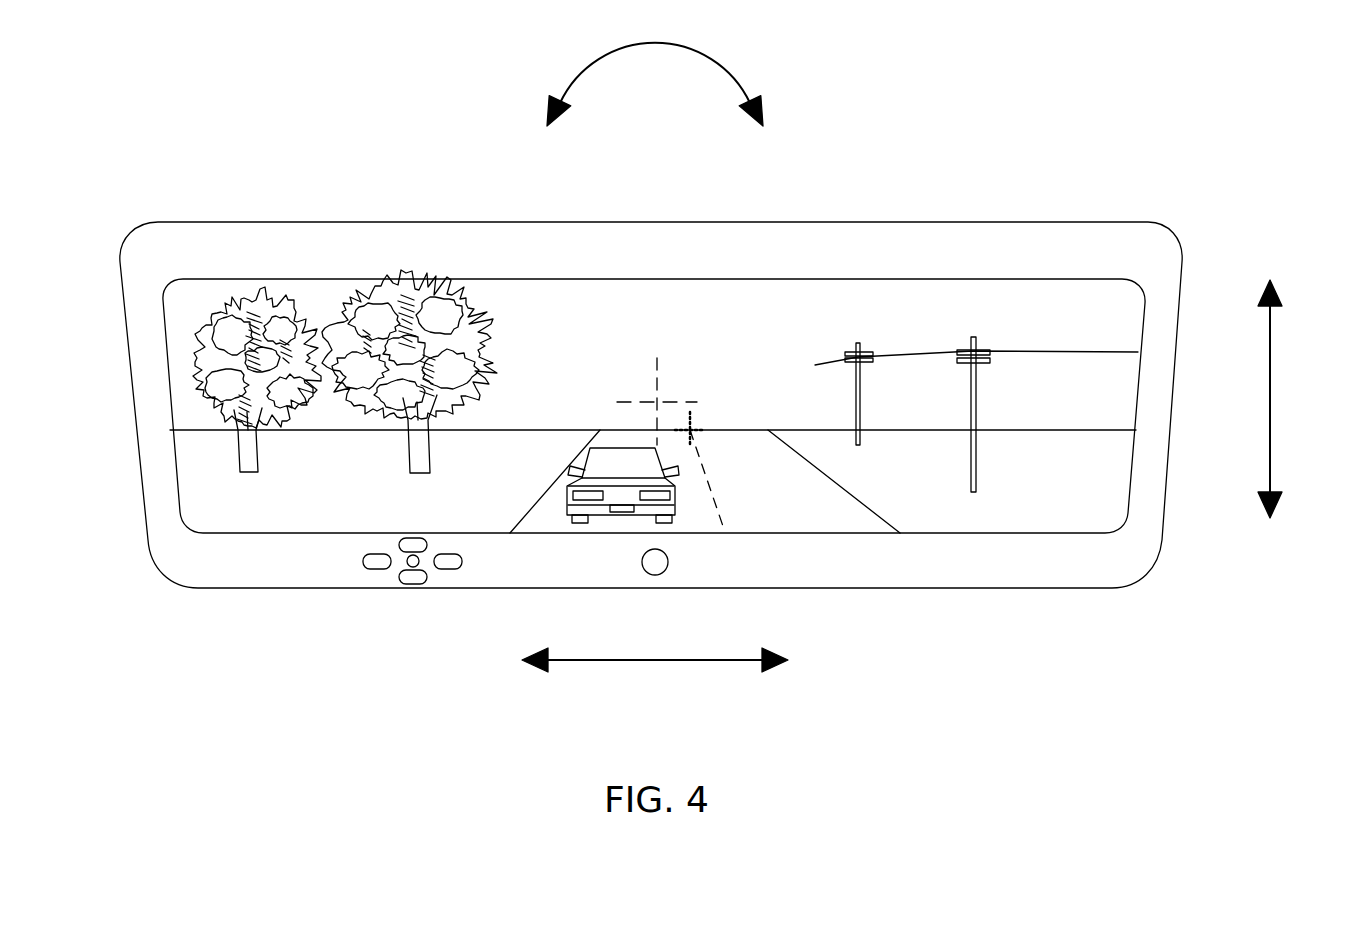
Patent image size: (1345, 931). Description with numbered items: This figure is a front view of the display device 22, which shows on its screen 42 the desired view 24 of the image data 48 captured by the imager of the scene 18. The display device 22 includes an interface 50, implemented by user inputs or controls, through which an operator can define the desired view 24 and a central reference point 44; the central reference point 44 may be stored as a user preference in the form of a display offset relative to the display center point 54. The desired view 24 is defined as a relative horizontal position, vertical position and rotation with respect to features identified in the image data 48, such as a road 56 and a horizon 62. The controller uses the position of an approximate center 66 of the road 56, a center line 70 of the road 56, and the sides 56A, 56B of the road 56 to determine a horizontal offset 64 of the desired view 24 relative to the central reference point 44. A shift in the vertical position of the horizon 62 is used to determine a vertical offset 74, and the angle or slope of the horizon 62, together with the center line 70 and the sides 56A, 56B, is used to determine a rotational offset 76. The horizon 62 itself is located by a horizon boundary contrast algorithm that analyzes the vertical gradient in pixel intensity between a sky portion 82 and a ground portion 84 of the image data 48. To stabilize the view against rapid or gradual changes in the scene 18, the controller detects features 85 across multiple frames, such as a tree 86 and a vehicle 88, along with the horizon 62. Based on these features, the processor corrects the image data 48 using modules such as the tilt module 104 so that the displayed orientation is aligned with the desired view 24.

The scene 18 is at (658, 383).
The image data 48 is at (1015, 305).
The display device 22 is at (658, 337).
The desired view 24 is at (627, 354).
The screen 42 is at (208, 296).
The central reference point 44 is at (657, 402).
The interface 50 is at (388, 578).
The display center point 54 is at (692, 415).
The road 56 is at (688, 481).
The side of the road 56A is at (512, 518).
The side of the road 56B is at (858, 496).
The horizon 62 is at (1018, 430).
The horizontal offset 64 is at (655, 662).
The approximate center of the road 66 is at (705, 520).
The center line of the road 70 is at (708, 478).
The vertical offset 74 is at (1272, 405).
The rotational offset 76 is at (697, 45).
The sky portion 82 is at (610, 348).
The ground portion 84 is at (370, 500).
The features 85 is at (972, 413).
The tree 86 is at (371, 371).
The vehicle 88 is at (606, 470).
The tilt module 104 is at (425, 428).